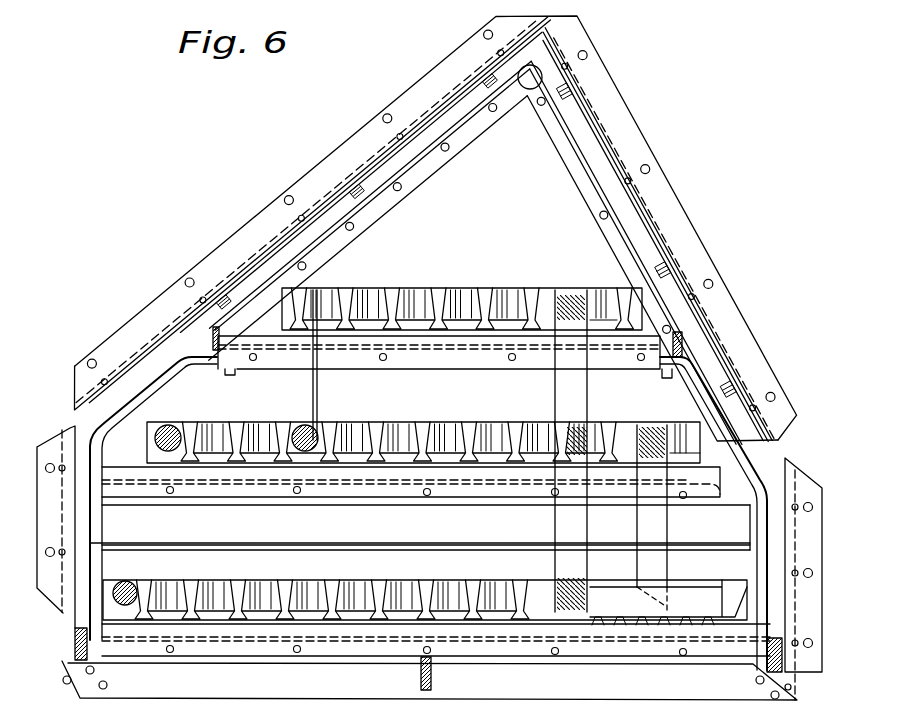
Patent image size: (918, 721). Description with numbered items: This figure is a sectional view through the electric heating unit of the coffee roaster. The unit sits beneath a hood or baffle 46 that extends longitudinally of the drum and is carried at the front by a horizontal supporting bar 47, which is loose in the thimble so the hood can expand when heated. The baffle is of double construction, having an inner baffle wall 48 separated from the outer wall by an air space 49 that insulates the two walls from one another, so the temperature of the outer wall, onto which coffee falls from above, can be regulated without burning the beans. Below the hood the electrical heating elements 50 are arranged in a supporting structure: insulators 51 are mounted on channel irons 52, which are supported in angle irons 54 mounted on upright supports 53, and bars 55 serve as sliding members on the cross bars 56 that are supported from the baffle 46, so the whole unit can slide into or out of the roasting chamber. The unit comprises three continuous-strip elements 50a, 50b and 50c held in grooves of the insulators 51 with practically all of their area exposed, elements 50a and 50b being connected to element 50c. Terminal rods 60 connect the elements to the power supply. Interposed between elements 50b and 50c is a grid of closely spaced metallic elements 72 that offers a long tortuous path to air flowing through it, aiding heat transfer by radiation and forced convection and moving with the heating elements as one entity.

The hood or baffle 46 is at (412, 128).
The horizontal supporting bar 47 is at (526, 92).
The inner baffle wall 48 is at (415, 155).
The air space 49 is at (352, 150).
The electrical heating elements 50 is at (448, 290).
The heating element 50a is at (536, 292).
The heating element 50b is at (493, 430).
The heating element 50c is at (448, 586).
The insulators 51 is at (449, 332).
The channel irons 52 is at (484, 366).
The upright supports 53 is at (100, 420).
The angle irons 54 is at (222, 330).
The bars 55 is at (76, 634).
The cross bars 56 is at (601, 694).
The terminal rods 60 is at (176, 425).
The metallic grid elements 72 is at (285, 546).